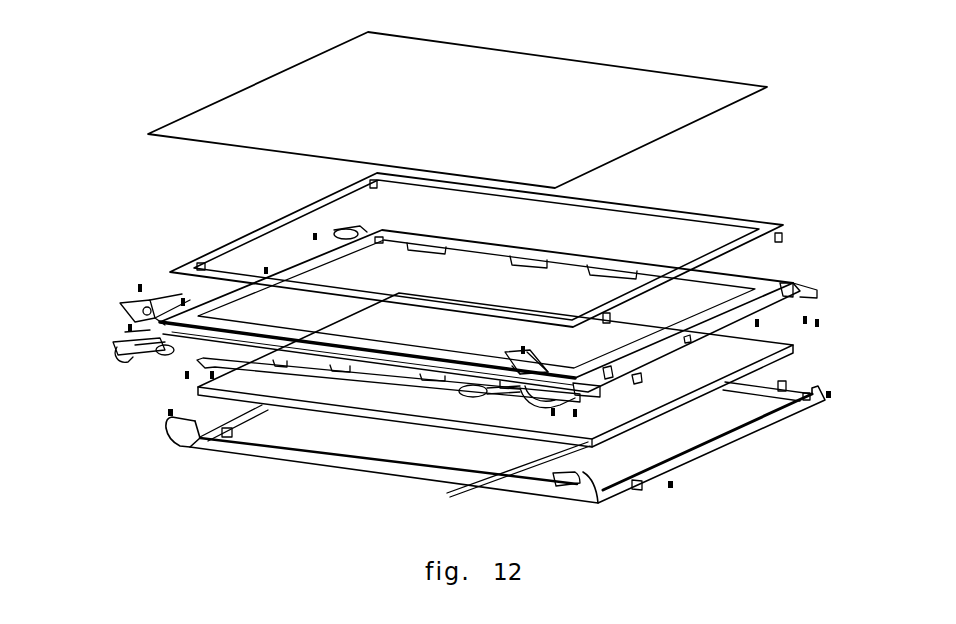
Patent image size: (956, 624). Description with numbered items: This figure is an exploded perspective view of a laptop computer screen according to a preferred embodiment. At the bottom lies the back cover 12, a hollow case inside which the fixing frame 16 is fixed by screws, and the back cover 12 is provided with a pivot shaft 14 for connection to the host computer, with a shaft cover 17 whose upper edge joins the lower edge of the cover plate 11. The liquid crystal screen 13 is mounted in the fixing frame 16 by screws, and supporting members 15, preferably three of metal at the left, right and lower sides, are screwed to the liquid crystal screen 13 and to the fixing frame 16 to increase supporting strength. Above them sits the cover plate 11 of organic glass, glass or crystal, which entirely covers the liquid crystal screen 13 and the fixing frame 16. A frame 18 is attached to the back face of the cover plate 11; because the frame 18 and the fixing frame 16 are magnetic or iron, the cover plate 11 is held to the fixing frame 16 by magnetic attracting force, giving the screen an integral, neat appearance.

The cover plate 11 is at (542, 77).
The back cover 12 is at (712, 452).
The liquid crystal screen 13 is at (657, 413).
The pivot shaft 14 is at (467, 395).
The supporting member 15 is at (183, 310).
The fixing frame 16 is at (753, 287).
The shaft cover 17 is at (137, 308).
The frame 18 is at (677, 213).